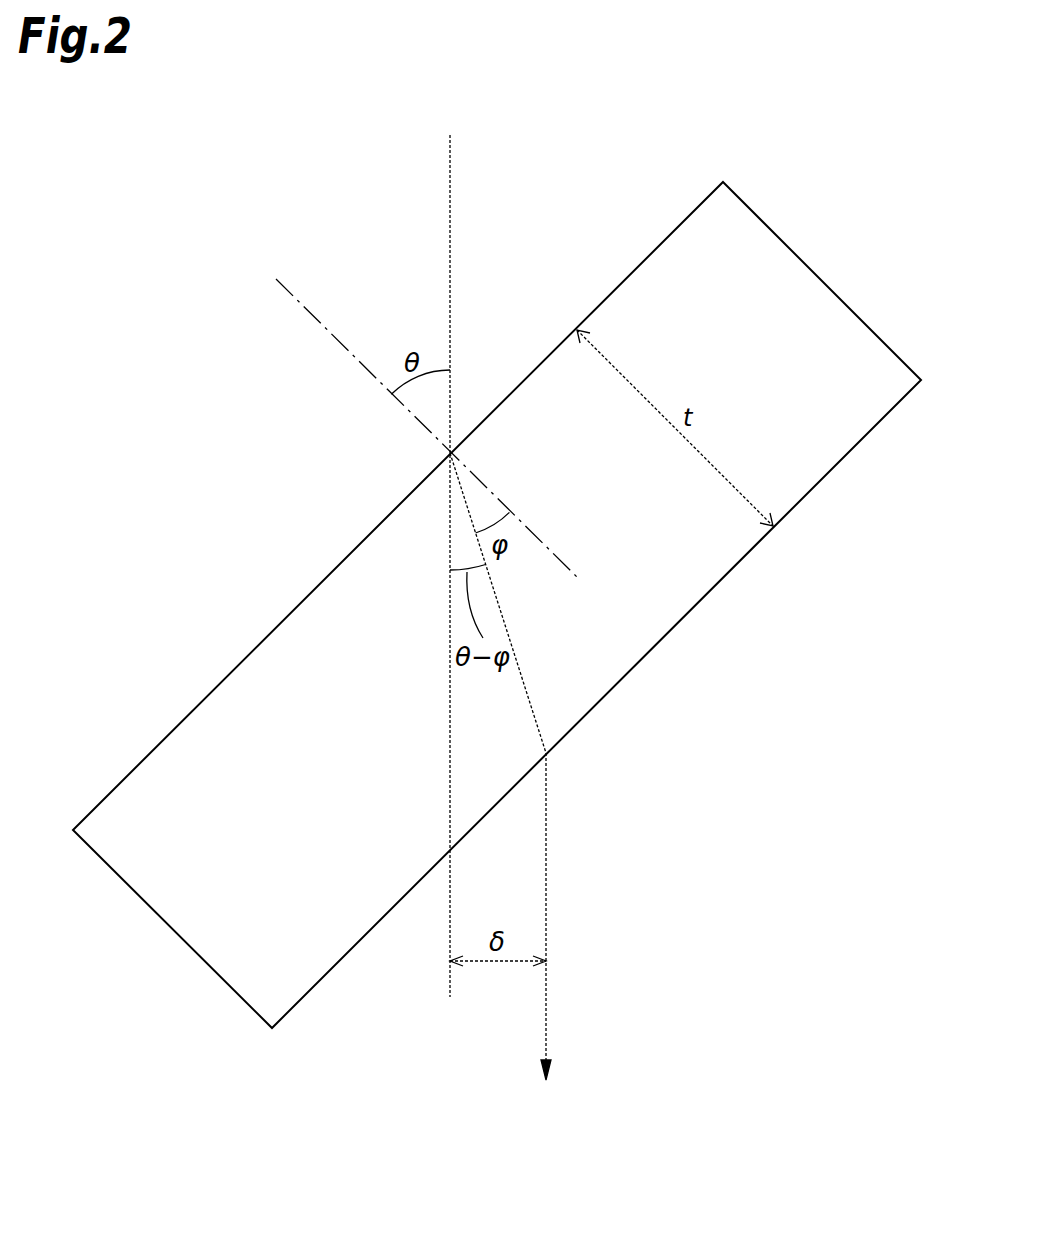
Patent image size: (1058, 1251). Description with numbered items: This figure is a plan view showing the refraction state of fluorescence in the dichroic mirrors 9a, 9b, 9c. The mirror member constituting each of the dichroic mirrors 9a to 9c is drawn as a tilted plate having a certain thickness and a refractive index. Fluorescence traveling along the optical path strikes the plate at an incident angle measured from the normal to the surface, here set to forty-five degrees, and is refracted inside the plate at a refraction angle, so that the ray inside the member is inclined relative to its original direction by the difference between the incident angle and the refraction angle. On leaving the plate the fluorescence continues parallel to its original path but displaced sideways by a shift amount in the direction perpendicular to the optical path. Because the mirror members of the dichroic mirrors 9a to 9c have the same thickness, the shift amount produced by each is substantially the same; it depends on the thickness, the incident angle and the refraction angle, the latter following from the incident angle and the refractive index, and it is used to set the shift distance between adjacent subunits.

The dichroic mirror 9a is at (503, 605).
The dichroic mirror 9b is at (497, 605).
The dichroic mirror 9c is at (796, 253).